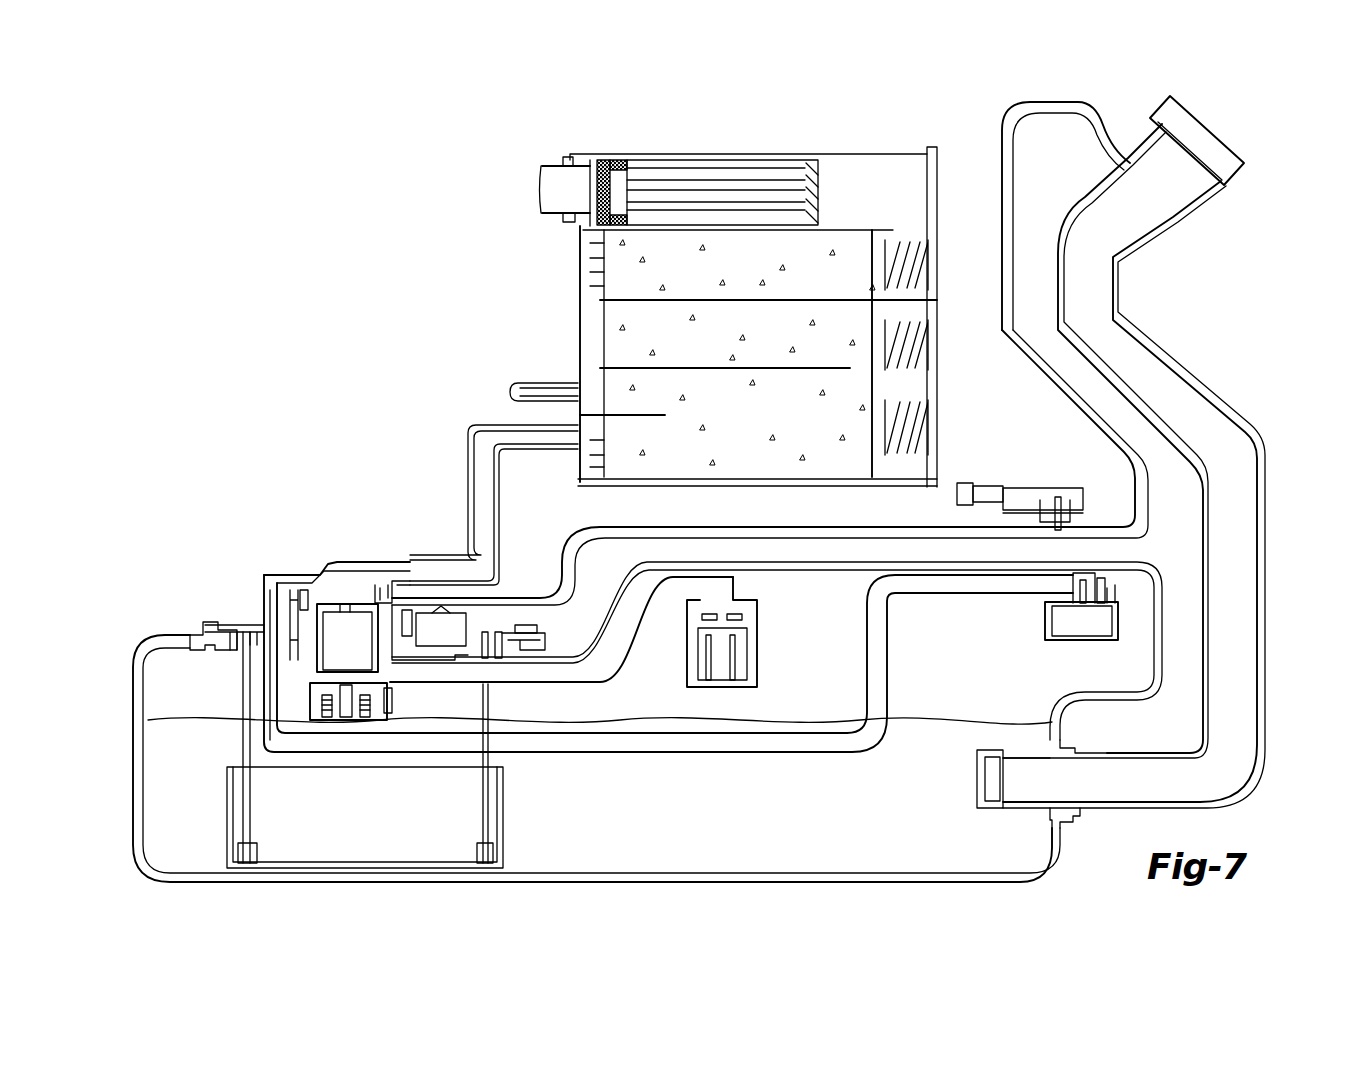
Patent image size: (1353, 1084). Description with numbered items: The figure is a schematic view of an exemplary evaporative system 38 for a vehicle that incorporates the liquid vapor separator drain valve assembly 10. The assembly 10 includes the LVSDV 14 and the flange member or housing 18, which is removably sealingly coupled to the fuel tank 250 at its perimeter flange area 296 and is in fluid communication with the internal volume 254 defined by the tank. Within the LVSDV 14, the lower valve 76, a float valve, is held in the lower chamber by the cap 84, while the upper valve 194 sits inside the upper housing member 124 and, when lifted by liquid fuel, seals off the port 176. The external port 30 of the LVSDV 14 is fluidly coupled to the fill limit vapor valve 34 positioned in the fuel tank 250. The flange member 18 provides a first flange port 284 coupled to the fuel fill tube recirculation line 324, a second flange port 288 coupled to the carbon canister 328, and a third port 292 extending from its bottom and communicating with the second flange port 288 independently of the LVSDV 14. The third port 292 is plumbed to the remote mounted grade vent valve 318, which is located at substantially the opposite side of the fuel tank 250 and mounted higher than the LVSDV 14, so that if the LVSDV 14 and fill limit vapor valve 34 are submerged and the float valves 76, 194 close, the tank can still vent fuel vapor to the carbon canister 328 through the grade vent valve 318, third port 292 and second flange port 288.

The liquid vapor separator drain valve (LVSDV) assembly 10 is at (291, 552).
The liquid vapor separator drain valve (LVSDV) 14 is at (410, 693).
The flange member or housing 18 is at (340, 555).
The external port 30 is at (438, 684).
The fill limit vapor valve (FLVV) 34 is at (770, 628).
The evaporative system 38 is at (318, 426).
The lower valve 76 is at (317, 713).
The cap or closure member 84 is at (398, 712).
The upper housing member 124 is at (293, 633).
The port 176 is at (348, 587).
The upper valve 194 is at (350, 655).
The fuel tank 250 is at (1042, 884).
The internal volume 254 is at (811, 713).
The first flange port 284 is at (504, 600).
The second flange port 288 is at (388, 565).
The third port 292 is at (264, 595).
The perimeter flange area 296 is at (193, 625).
The remote mounted grade vent valve 318 is at (1130, 632).
The fuel fill tube recirculation line 324 is at (772, 527).
The carbon canister 328 is at (562, 291).